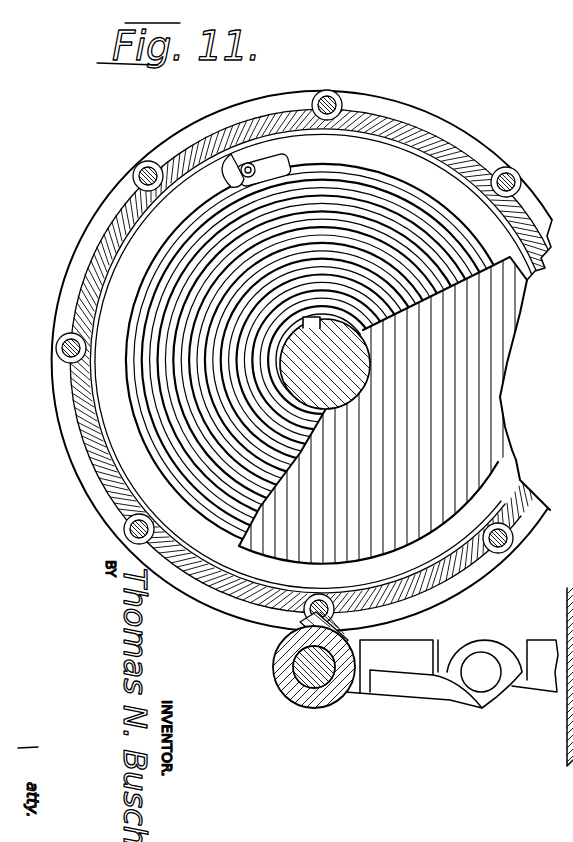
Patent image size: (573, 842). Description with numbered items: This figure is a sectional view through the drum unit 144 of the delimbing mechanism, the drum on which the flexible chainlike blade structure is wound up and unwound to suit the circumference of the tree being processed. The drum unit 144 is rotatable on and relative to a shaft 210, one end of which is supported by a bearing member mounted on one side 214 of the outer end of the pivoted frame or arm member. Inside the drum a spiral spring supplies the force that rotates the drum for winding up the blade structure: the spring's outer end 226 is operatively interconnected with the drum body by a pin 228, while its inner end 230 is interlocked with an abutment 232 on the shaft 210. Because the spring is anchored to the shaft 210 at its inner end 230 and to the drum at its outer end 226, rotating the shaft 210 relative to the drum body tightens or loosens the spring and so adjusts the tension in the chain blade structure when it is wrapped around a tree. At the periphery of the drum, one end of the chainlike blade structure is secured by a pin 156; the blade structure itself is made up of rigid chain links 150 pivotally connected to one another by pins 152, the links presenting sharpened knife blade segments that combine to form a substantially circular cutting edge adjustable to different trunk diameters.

The drum unit 144 is at (475, 118).
The side of the outer end of the frame or arm member 214 is at (572, 139).
The outer end of the spiral spring 226 is at (254, 162).
The pin 228 is at (227, 172).
The abutment 232 is at (307, 321).
The inner end of the spiral spring 230 is at (322, 321).
The shaft 210 is at (356, 372).
The rigid chain links 150 is at (404, 690).
The pins 152 is at (483, 688).
The pin 156 is at (310, 688).